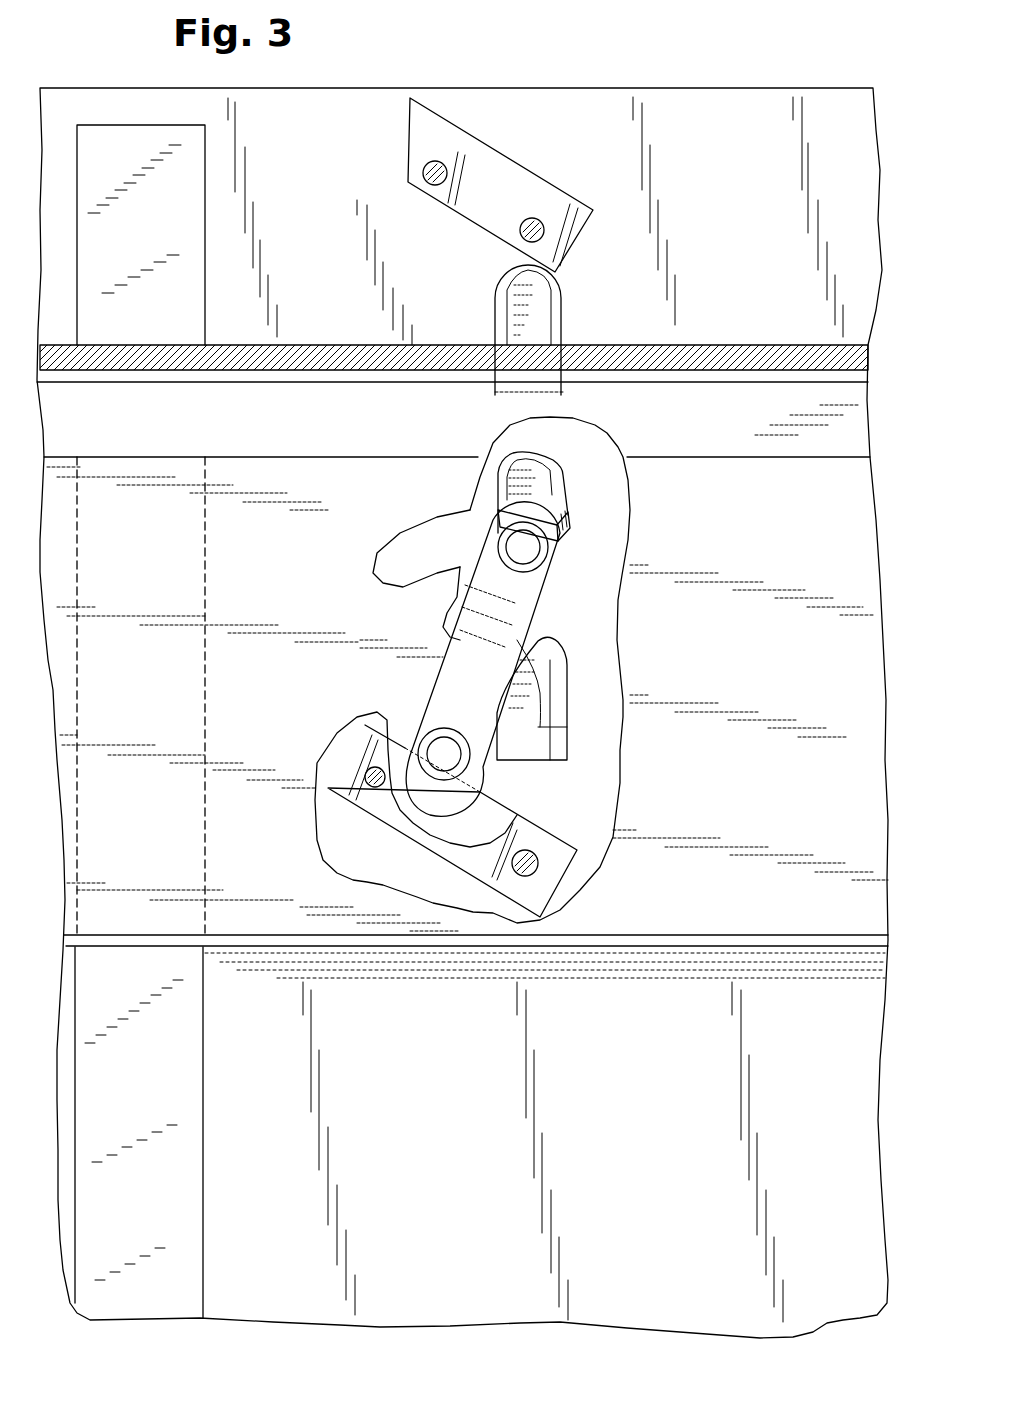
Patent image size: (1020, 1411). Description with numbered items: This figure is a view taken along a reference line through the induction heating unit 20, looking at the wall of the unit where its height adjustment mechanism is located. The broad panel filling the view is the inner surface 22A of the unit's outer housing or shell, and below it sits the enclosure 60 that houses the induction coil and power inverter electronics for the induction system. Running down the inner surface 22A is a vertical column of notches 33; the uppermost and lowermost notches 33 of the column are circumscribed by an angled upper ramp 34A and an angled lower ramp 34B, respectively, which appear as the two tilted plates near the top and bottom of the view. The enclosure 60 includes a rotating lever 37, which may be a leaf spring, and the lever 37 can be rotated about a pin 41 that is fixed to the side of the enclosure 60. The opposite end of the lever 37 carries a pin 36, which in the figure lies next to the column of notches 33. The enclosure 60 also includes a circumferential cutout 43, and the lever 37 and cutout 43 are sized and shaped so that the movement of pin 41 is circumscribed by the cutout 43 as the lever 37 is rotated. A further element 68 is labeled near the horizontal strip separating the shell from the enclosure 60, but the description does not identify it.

The induction heating unit 20 is at (842, 80).
The inner surface 22A is at (735, 208).
The seal strip 68 is at (763, 345).
The upper ramp 34A is at (497, 150).
The notches 33 is at (532, 326).
The enclosure 60 is at (282, 588).
The circumferential cutout 43 is at (413, 557).
The rotating lever 37 is at (463, 606).
The pin 36 is at (548, 593).
The pin 41 is at (443, 750).
The lower ramp 34B is at (556, 860).